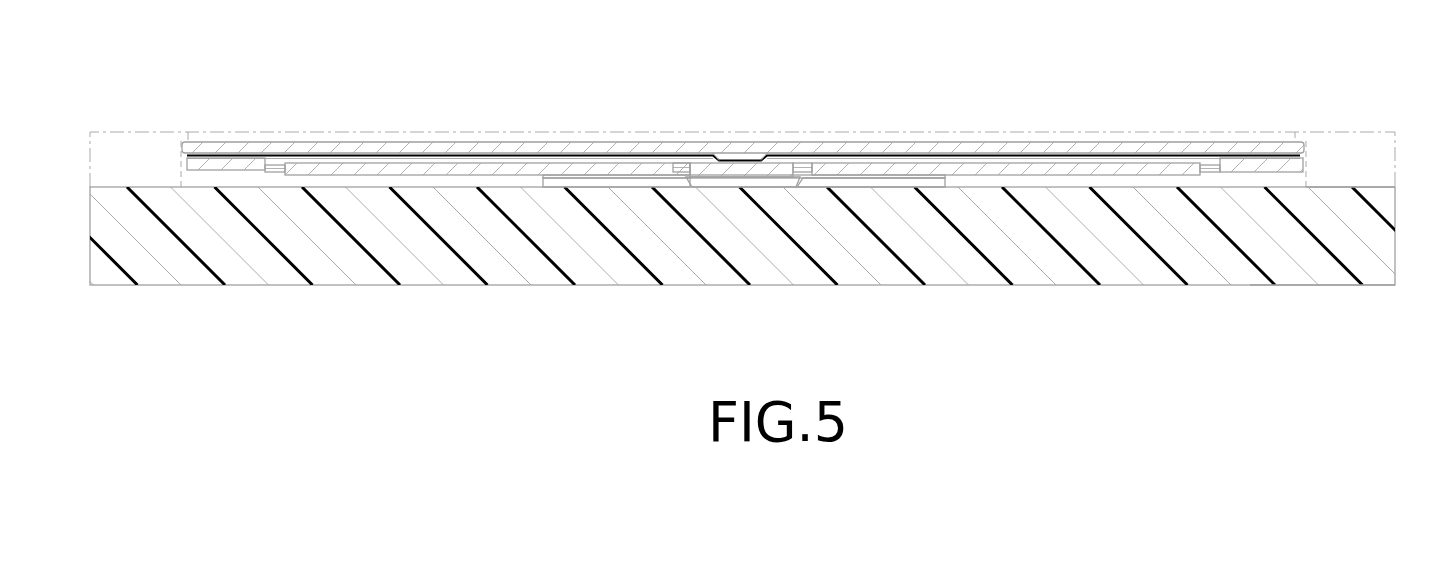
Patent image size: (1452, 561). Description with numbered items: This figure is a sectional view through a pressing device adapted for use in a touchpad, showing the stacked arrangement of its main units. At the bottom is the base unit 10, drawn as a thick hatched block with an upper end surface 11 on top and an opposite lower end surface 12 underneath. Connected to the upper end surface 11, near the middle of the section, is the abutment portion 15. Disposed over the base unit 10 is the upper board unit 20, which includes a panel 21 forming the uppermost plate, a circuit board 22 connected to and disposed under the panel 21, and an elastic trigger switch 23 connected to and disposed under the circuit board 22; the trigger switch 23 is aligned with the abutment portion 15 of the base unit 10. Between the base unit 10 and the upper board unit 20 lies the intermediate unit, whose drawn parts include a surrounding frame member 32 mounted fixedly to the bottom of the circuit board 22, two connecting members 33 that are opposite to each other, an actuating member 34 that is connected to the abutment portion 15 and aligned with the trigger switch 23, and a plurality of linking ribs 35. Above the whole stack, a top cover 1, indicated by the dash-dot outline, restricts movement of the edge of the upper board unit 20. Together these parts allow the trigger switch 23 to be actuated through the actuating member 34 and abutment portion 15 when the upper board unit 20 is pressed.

The top cover 1 is at (188, 130).
The base unit 10 is at (1240, 290).
The upper end surface 11 is at (1333, 187).
The lower end surface 12 is at (1338, 285).
The abutment portion 15 is at (730, 182).
The upper board unit 20 is at (1148, 132).
The panel 21 is at (1197, 148).
The circuit board 22 is at (905, 156).
The trigger switch 23 is at (744, 160).
The surrounding frame member 32 is at (1277, 165).
The connecting members 33 is at (531, 168).
The actuating member 34 is at (780, 168).
The linking ribs 35 is at (272, 168).